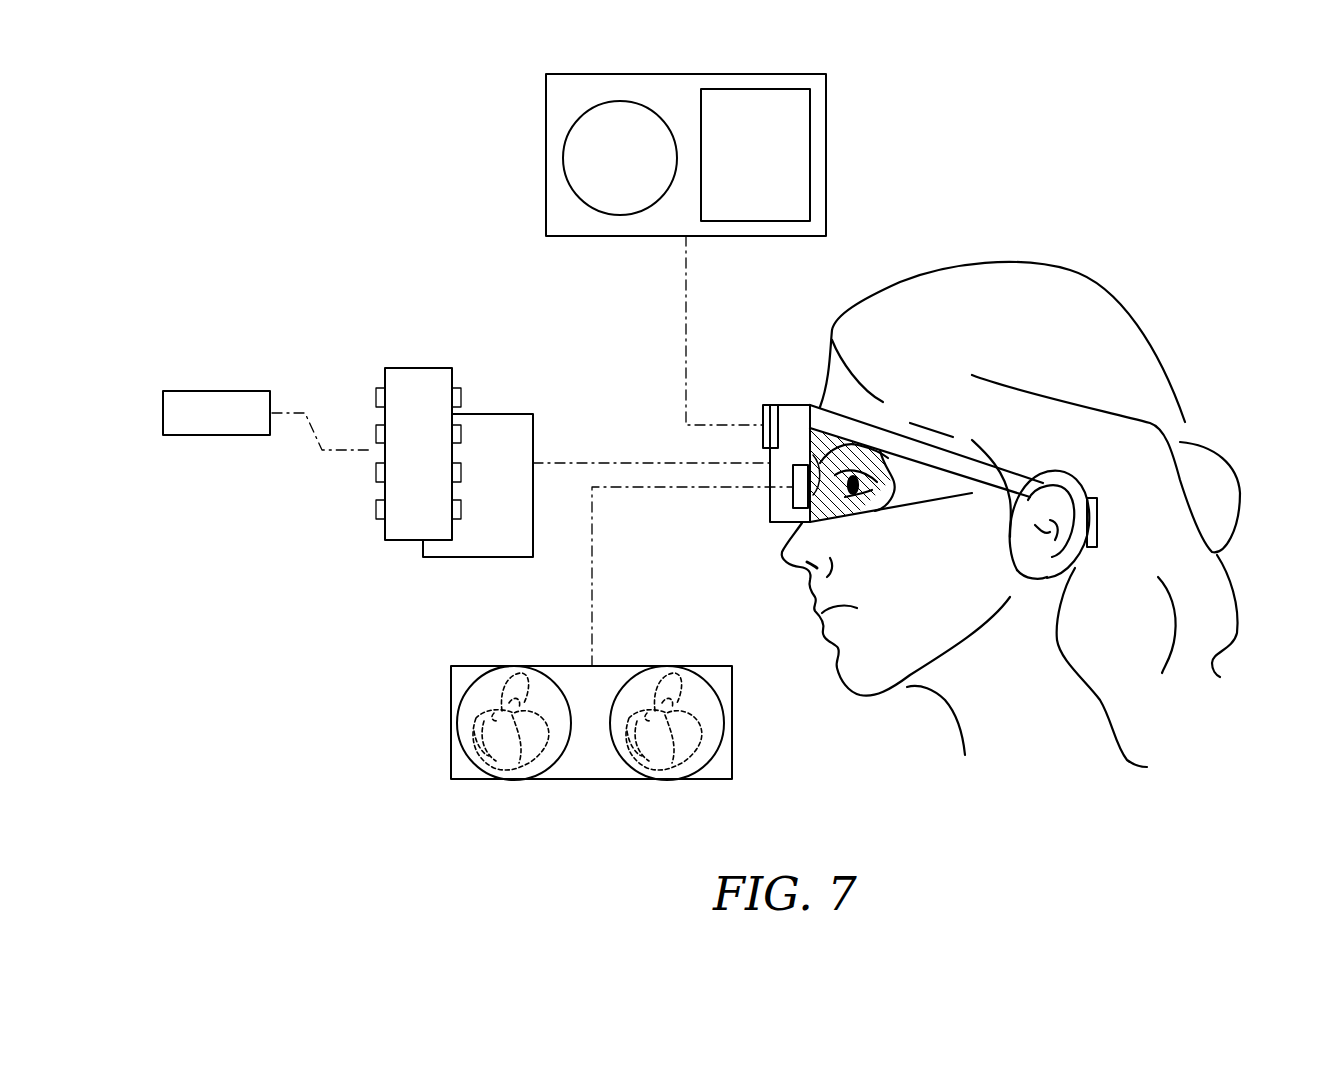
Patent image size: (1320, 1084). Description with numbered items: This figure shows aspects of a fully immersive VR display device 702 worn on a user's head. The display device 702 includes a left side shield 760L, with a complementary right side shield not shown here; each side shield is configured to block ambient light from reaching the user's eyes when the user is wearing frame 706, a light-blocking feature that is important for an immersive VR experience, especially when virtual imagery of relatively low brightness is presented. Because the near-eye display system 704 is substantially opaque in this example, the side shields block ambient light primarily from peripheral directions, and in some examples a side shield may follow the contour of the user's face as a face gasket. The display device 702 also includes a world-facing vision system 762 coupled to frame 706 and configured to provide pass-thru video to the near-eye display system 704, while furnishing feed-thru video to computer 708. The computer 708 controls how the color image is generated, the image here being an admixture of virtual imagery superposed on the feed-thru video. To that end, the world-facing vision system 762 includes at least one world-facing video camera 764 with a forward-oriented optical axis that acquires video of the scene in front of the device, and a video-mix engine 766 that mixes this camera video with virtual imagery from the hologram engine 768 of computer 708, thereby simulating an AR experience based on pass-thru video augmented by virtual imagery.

The display device 702 is at (848, 446).
The near-eye display system 704 is at (436, 803).
The frame 706 is at (1018, 467).
The computer 708 is at (495, 386).
The left side shield 760L is at (880, 450).
The world-facing vision system 762 is at (625, 155).
The world-facing video camera 764 is at (602, 169).
The video-mix engine 766 is at (737, 166).
The hologram engine 768 is at (198, 424).